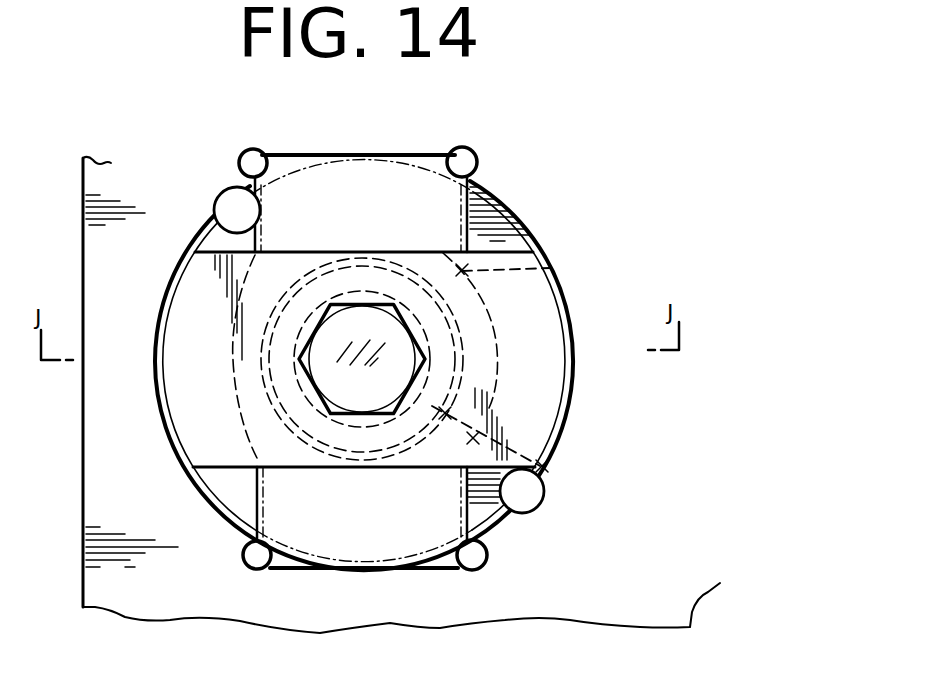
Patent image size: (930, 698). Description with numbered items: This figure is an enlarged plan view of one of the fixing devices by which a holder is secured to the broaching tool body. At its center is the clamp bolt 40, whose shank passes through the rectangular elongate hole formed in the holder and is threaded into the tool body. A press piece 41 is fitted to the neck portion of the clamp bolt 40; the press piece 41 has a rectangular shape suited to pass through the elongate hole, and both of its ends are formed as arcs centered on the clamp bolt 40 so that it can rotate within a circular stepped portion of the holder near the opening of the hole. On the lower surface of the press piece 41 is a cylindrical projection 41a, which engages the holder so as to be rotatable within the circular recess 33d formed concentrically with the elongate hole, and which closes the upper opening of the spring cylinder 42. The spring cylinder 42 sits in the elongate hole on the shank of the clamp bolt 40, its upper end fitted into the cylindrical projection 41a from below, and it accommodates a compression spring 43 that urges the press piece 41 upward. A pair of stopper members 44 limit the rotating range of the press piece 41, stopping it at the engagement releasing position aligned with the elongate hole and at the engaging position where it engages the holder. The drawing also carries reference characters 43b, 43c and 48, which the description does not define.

The circular recess 33d is at (499, 372).
The clamp bolt 40 is at (403, 337).
The press piece 41 is at (547, 394).
The cylindrical projection 41a is at (550, 268).
The spring cylinder 42 is at (548, 469).
The compression spring 43 is at (620, 603).
The bracket lower bar 43b is at (451, 570).
The bracket upper portion 43c is at (506, 221).
The stopper members 44 is at (231, 203).
The housing wall 48 is at (207, 551).